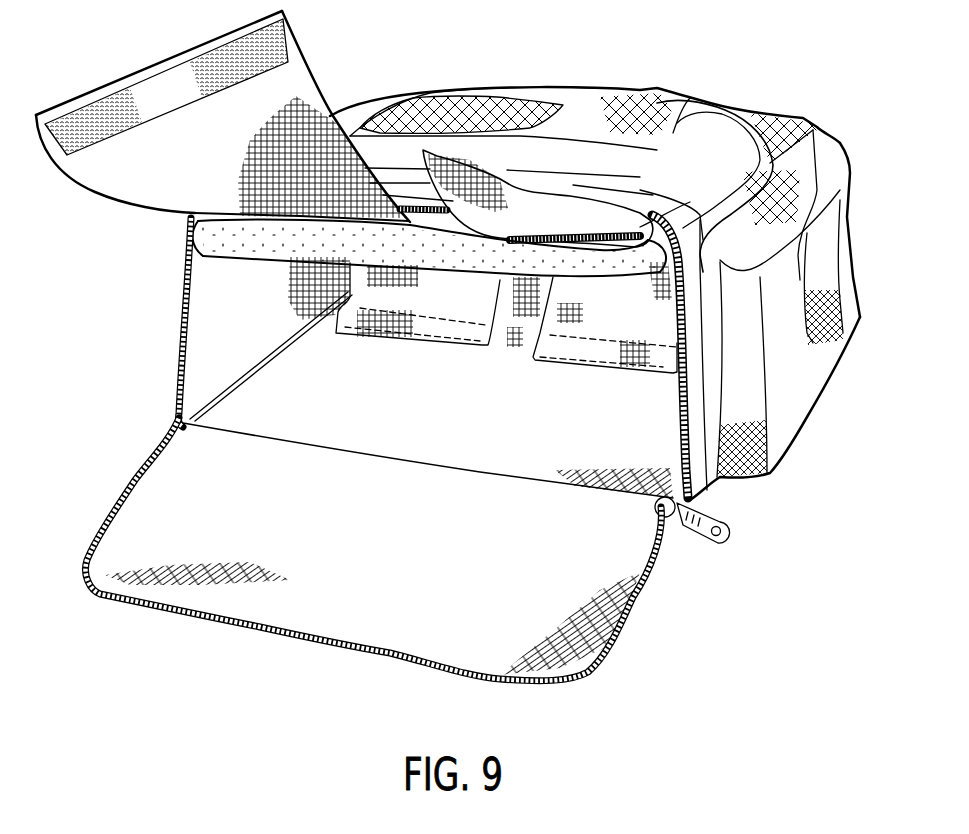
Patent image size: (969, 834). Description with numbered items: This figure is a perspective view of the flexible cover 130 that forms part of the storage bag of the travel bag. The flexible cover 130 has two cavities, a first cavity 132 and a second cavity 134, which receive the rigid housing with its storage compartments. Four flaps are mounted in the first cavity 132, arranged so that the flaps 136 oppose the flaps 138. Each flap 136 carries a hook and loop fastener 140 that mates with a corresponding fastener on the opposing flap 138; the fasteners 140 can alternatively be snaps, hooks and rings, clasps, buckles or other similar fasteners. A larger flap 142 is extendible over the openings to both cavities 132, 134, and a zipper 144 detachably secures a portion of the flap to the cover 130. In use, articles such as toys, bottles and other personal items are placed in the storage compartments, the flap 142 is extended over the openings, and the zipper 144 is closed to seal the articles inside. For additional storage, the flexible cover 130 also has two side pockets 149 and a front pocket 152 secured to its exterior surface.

The flexible cover 130 is at (645, 57).
The first cavity 132 is at (423, 380).
The cavity 134 is at (268, 257).
The flap 136 is at (148, 198).
The flap 138 is at (470, 338).
The hook and loop fastener 140 is at (292, 37).
The flap 142 is at (367, 630).
The zipper 144 is at (227, 630).
The side pocket 149 is at (792, 420).
The front pocket 152 is at (543, 103).